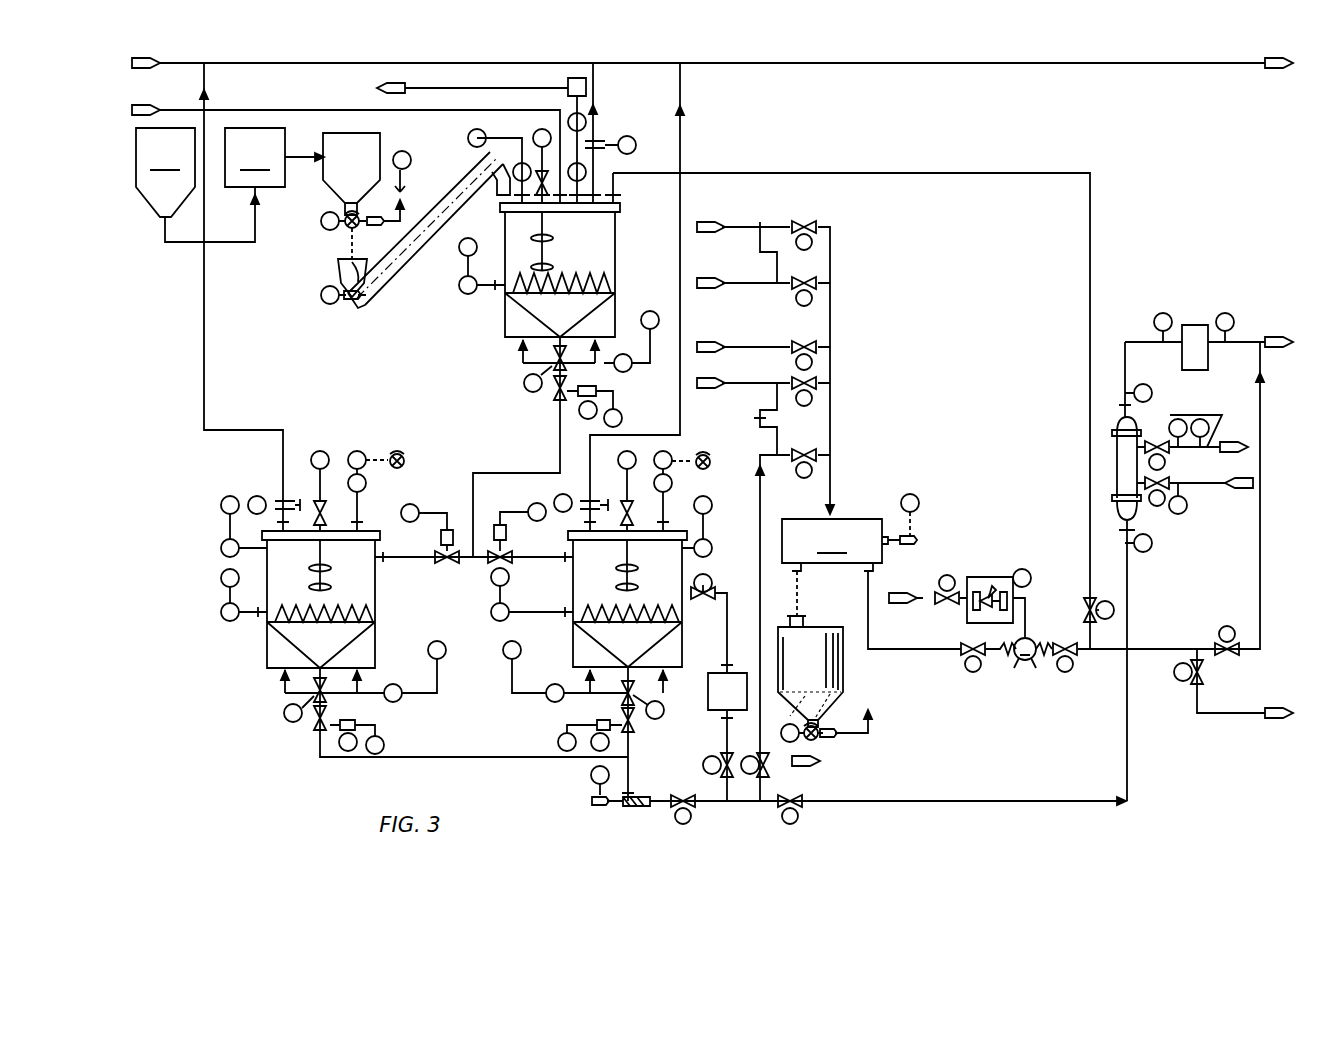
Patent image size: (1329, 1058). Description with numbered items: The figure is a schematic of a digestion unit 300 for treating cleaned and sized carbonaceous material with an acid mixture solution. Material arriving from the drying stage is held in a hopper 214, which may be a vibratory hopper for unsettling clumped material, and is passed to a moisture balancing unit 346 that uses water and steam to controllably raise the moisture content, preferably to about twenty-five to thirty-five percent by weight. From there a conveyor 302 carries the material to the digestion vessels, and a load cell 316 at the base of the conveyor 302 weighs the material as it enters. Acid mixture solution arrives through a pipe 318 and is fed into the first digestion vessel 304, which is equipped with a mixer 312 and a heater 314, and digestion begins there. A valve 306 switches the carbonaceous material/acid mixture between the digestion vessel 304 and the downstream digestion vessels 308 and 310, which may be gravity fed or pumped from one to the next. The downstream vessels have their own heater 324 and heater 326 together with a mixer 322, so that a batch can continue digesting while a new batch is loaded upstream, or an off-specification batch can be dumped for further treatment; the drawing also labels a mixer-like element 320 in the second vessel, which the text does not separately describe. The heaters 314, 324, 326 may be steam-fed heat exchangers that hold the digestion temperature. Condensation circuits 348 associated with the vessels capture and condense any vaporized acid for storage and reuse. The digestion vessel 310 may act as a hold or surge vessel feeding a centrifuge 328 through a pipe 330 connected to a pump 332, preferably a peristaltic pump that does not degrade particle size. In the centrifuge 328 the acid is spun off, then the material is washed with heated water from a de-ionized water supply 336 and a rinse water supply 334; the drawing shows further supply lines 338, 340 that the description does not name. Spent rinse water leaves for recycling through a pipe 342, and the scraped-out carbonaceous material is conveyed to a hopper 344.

The digestion unit 300 is at (236, 766).
The hopper 214 is at (197, 185).
The conveyor 302 is at (412, 262).
The digestion vessel 304 is at (524, 310).
The valve 306 is at (472, 565).
The digestion vessel 308 is at (424, 604).
The digestion vessel 310 is at (619, 626).
The mixer 312 is at (553, 240).
The heater 314 is at (604, 278).
The load cell 316 is at (340, 277).
The pipe 318 is at (332, 110).
The agitator 320 is at (336, 574).
The mixer 322 is at (614, 577).
The heater 324 is at (292, 604).
The heater 326 is at (658, 602).
The centrifuge 328 is at (850, 532).
The pipe 330 is at (634, 747).
The pump 332 is at (640, 795).
The rinse water supply 334 is at (744, 388).
The de-ionized water supply 336 is at (744, 223).
The gas supply line 338 is at (738, 287).
The gas supply line 340 is at (767, 343).
The pipe 342 is at (938, 656).
The hopper 344 is at (843, 668).
The moisture balancing unit 346 is at (274, 157).
The condensation circuits 348 is at (912, 65).